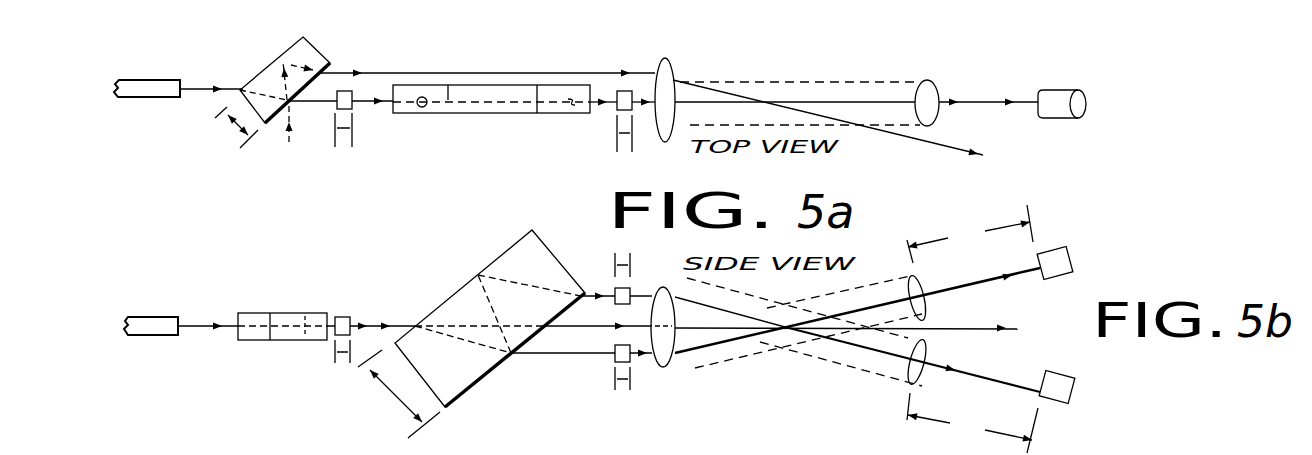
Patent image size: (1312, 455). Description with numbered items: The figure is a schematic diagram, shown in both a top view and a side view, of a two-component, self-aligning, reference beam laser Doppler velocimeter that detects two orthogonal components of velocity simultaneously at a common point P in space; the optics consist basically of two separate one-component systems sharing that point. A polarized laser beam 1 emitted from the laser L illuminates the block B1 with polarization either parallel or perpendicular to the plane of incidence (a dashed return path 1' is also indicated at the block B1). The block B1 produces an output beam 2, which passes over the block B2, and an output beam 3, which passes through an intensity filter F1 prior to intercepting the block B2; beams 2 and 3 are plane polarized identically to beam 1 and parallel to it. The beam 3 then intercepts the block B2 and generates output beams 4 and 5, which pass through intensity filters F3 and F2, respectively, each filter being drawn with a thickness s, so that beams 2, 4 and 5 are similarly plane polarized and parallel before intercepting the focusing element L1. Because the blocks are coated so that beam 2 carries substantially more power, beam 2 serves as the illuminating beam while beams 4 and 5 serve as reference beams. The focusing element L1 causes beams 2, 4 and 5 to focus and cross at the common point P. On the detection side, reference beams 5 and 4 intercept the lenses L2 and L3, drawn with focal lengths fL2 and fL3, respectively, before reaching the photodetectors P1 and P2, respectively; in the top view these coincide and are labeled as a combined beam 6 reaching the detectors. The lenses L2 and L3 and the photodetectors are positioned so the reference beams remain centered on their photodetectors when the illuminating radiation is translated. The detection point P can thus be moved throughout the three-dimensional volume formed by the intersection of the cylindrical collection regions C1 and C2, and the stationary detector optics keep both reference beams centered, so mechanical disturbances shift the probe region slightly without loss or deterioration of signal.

In FIG. 5A, the laser L is at (156, 80).
In FIG. 5B, the laser L is at (143, 315).
In FIG. 5A, the polarized laser beam 1 is at (211, 76).
In FIG. 5B, the polarized laser beam 1 is at (208, 314).
In FIG. 5A, the returned beam 1' is at (297, 133).
In FIG. 5A, the output beam 2 is at (1006, 160).
In FIG. 5B, the output beam 2 is at (672, 318).
In FIG. 5A, the output beam 3 is at (340, 91).
In FIG. 5B, the output beam 3 is at (371, 319).
In FIG. 5A, the output beam 4 is at (787, 92).
In FIG. 5B, the output beam 4 is at (963, 384).
In FIG. 5A, the output beam 5 is at (643, 93).
In FIG. 5B, the output beam 5 is at (1021, 293).
In FIG. 5A, the output beam to photodetector 6 is at (1011, 92).
In FIG. 5A, the block B1 is at (266, 126).
In FIG. 5B, the block B1 is at (268, 313).
In FIG. 5B, the block B2 is at (546, 245).
In FIG. 5A, the intensity filter F1 is at (352, 108).
In FIG. 5B, the intensity filter F1 is at (346, 315).
In FIG. 5A, the intensity filter F2 is at (600, 126).
In FIG. 5B, the intensity filter F2 is at (615, 361).
In FIG. 5A, the intensity filter F3 is at (615, 111).
In FIG. 5B, the intensity filter F3 is at (630, 290).
In FIG. 5A, the filter thickness s is at (483, 132).
In FIG. 5B, the filter thickness s is at (482, 321).
In FIG. 5A, the focusing element L1 is at (673, 63).
In FIG. 5B, the focusing element L1 is at (673, 294).
In FIG. 5A, the lens L2 is at (956, 93).
In FIG. 5B, the lens L2 is at (930, 283).
In FIG. 5A, the lens L3 is at (937, 81).
In FIG. 5B, the lens L3 is at (935, 353).
In FIG. 5A, the cylindrical collection region C1 is at (800, 93).
In FIG. 5B, the cylindrical collection region C1 is at (900, 281).
In FIG. 5A, the cylindrical collection region C2 is at (827, 83).
In FIG. 5B, the cylindrical collection region C2 is at (808, 359).
In FIG. 5A, the common point P is at (777, 96).
In FIG. 5B, the common point P is at (788, 326).
In FIG. 5A, the photodetector P1 is at (1074, 91).
In FIG. 5B, the photodetector P1 is at (1073, 262).
In FIG. 5A, the photodetector P2 is at (1048, 90).
In FIG. 5B, the photodetector P2 is at (1052, 407).
In FIG. 5B, the focal length of lens L2 fL2 is at (970, 234).
In FIG. 5B, the focal length of lens L3 fL3 is at (972, 423).